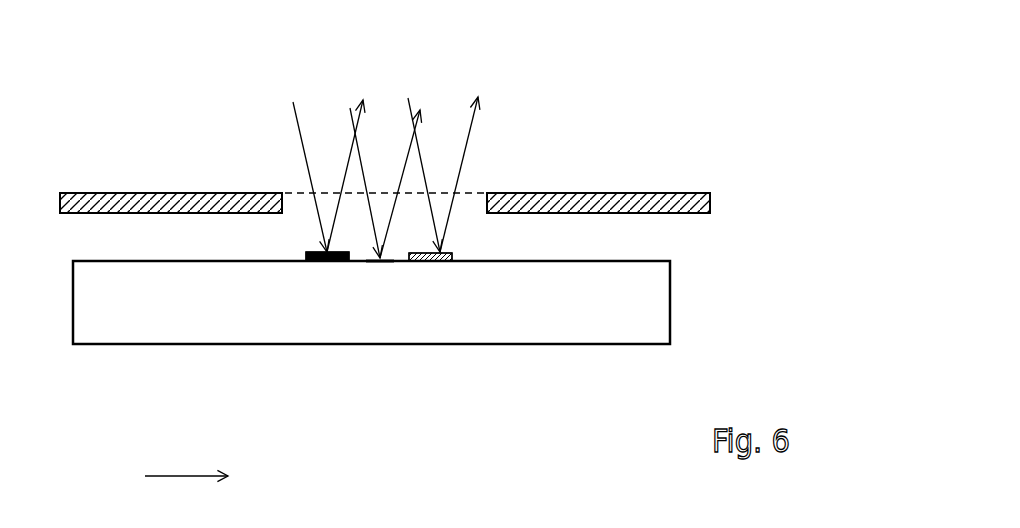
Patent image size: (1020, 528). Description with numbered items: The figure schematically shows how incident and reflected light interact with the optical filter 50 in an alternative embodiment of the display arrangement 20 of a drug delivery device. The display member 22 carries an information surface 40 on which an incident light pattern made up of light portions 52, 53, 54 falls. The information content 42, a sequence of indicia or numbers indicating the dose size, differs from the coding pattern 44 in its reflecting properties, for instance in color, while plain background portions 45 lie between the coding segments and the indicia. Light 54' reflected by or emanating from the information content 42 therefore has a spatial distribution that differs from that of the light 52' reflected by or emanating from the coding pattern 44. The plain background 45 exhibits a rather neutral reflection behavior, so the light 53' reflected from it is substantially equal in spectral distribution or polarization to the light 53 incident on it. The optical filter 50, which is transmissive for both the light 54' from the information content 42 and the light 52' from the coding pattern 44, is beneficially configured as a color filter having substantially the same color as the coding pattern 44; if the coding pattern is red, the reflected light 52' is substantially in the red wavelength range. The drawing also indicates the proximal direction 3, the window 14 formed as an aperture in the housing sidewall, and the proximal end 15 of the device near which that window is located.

The proximal direction 3 is at (173, 476).
The window 14 is at (480, 188).
The proximal end 15 is at (681, 171).
The display arrangement 20 is at (340, 117).
The display member 22 is at (452, 327).
The information surface 40 is at (371, 282).
The information content 42 is at (331, 263).
The coding pattern 44 is at (422, 262).
The plain background portions 45 is at (367, 263).
The optical filter 50 is at (287, 190).
The light portion incident on coding pattern 52 is at (461, 244).
The light reflected by coding pattern 52' is at (453, 174).
The light portion incident on plain background 53 is at (364, 245).
The light reflected by plain background portions 53' is at (395, 184).
The light portion incident on information content 54 is at (299, 244).
The light reflected by information content 54' is at (338, 176).